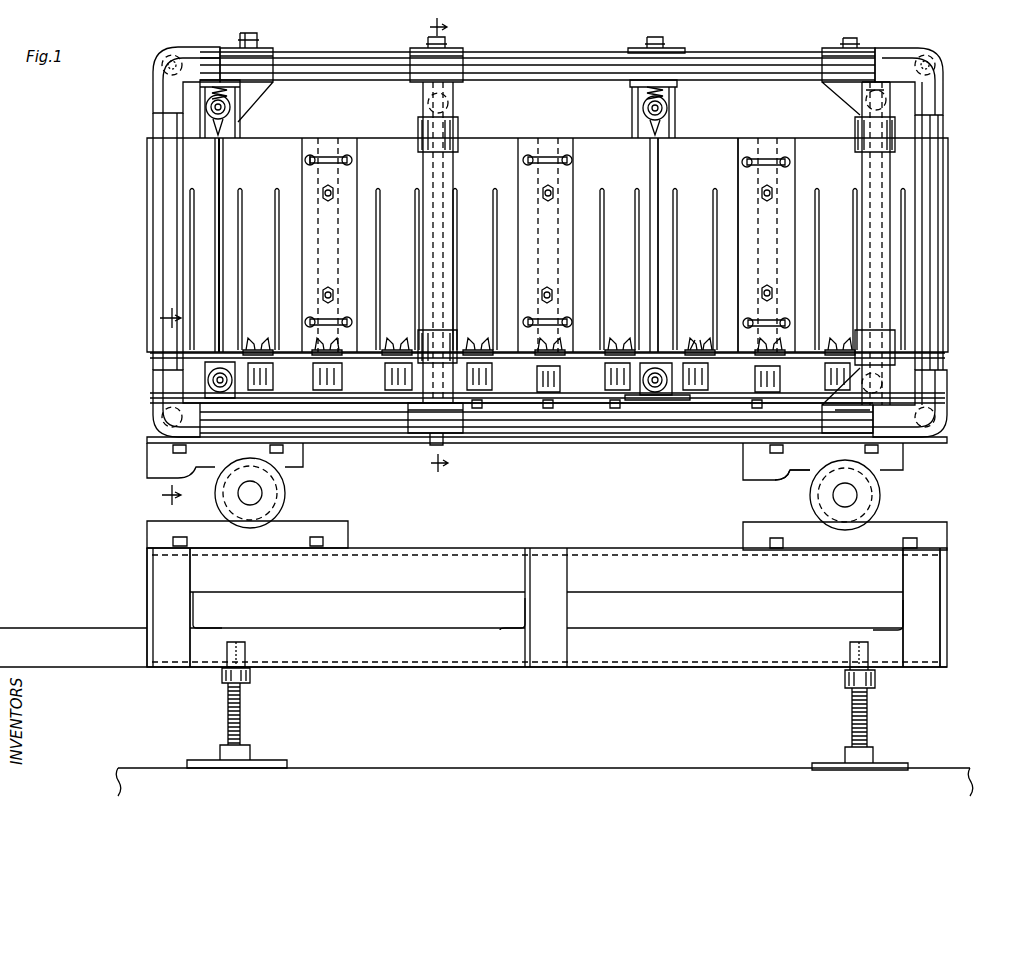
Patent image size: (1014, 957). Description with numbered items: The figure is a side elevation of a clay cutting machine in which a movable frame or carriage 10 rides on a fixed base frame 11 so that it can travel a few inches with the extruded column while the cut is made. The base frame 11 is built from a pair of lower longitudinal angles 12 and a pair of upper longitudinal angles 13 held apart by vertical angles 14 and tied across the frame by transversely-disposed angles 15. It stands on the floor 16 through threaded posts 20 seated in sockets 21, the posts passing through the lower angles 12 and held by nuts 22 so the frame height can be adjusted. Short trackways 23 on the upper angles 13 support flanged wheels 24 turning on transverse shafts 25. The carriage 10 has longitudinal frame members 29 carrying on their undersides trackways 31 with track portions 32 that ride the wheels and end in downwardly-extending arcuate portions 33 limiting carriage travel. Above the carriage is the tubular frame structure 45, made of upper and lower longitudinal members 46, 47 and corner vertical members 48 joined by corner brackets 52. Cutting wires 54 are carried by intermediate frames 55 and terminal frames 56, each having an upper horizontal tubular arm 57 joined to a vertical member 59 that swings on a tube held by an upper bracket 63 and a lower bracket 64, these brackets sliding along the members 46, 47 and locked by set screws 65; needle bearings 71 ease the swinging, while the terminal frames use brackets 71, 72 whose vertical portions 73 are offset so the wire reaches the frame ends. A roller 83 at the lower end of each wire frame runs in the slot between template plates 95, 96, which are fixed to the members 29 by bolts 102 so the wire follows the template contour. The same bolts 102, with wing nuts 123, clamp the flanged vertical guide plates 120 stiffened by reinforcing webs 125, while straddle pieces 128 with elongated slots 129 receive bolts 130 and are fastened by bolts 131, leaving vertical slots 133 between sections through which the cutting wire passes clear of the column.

The movable frame or carriage 10 is at (957, 430).
The base frame 11 is at (955, 641).
The lower longitudinal angles 12 is at (770, 668).
The upper longitudinal angles 13 is at (830, 586).
The vertical angles 14 is at (160, 606).
The transversely-disposed angles 15 is at (505, 625).
The floor 16 is at (690, 768).
The threaded posts 20 is at (242, 718).
The sockets 21 is at (876, 760).
The nuts 22 is at (876, 688).
The short trackways 23 is at (893, 522).
The flanged wheels 24 is at (285, 498).
The transverse shafts 25 is at (856, 495).
The longitudinal frame members 29 is at (693, 392).
The trackways 31 is at (303, 468).
The track portions 32 is at (812, 470).
The downwardly-extending arcuate portions 33 is at (778, 480).
The frame structure 45 is at (945, 136).
The upper longitudinal member 46 is at (603, 62).
The lower longitudinal member 47 is at (585, 435).
The vertical members 48 is at (153, 175).
The corner brackets 52 is at (940, 95).
The cutting wires 54 is at (672, 110).
The intermediate frames 55 is at (470, 133).
The terminal frames 56 is at (254, 128).
The upper horizontal tubular arm 57 is at (642, 102).
The vertical member 59 is at (432, 175).
The upper bracket 63 is at (460, 48).
The lower bracket 64 is at (450, 430).
The set screws 65 is at (428, 33).
The needle bearings 71 is at (272, 80).
The bracket 72 is at (838, 425).
The vertical portions 73 is at (868, 100).
The roller 83 is at (656, 395).
The template plate 95 is at (630, 402).
The template plate 96 is at (700, 395).
The bolts 102 is at (550, 408).
The vertical guide plates 120 is at (585, 138).
The wing nuts 123 is at (618, 350).
The reinforcing webs 125 is at (705, 200).
The straddle pieces 128 is at (350, 172).
The elongated slots 129 is at (335, 155).
The bolts 130 is at (310, 155).
The bolts 131 is at (334, 193).
The vertical slots 133 is at (224, 172).